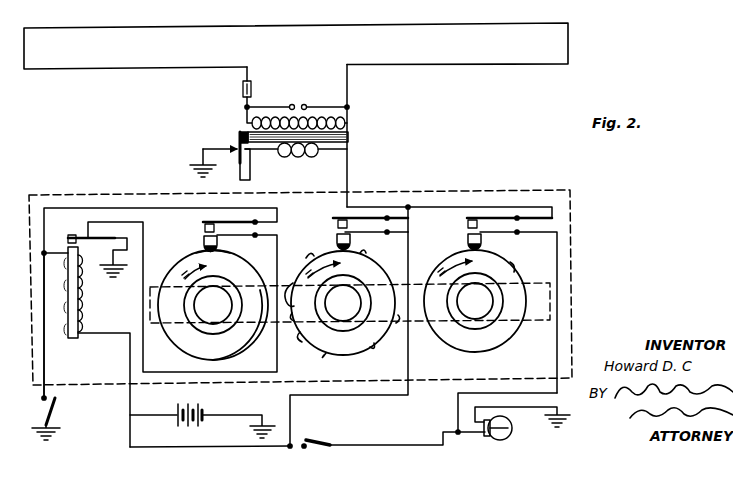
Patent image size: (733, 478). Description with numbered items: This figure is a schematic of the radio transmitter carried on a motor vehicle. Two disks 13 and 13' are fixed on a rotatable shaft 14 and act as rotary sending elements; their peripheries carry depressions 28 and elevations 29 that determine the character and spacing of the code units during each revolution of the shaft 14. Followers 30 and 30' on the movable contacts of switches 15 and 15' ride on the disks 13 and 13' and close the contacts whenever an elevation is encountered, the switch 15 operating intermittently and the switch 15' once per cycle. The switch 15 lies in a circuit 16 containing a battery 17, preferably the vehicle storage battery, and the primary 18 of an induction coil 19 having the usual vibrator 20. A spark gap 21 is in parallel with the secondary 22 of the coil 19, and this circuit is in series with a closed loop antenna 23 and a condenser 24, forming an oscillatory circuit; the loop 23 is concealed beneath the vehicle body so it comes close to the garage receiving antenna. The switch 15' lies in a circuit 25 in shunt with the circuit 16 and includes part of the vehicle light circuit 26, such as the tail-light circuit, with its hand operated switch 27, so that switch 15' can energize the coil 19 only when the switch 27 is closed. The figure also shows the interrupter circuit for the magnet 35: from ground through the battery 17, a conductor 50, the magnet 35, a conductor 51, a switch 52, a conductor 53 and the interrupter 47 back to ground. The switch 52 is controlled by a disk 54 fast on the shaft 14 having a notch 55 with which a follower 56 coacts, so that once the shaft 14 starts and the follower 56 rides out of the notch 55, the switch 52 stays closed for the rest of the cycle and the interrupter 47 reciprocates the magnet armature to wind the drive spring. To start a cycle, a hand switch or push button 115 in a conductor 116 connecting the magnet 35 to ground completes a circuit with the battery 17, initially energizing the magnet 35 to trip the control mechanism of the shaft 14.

The disk 13 is at (345, 304).
The disk 13' is at (475, 296).
The rotatable shaft 14 is at (550, 291).
The switch 15 is at (356, 218).
The switch 15' is at (494, 218).
The circuit 16 is at (363, 398).
The battery 17 is at (203, 410).
The primary 18 is at (297, 157).
The induction coil 19 is at (351, 136).
The vibrator 20 is at (234, 139).
The spark gap 21 is at (292, 104).
The secondary 22 is at (333, 118).
The loop antenna 23 is at (412, 22).
The condenser 24 is at (252, 85).
The circuit 25 is at (514, 181).
The light circuit 26 is at (446, 432).
The hand operated switch 27 is at (318, 438).
The peripheral depressions 28 is at (295, 285).
The elevations 29 is at (302, 338).
The follower 30 is at (353, 239).
The follower 30' is at (493, 310).
The magnet 35 is at (81, 281).
The interrupter 47 is at (86, 233).
The conductor 50 is at (100, 333).
The conductor 51 is at (112, 184).
The switch 52 is at (203, 223).
The conductor 53 is at (170, 372).
The disk 54 is at (254, 282).
The notch 55 is at (225, 257).
The follower 56 is at (203, 241).
The hand switch or push button 115 is at (57, 412).
The conductor 116 is at (47, 363).